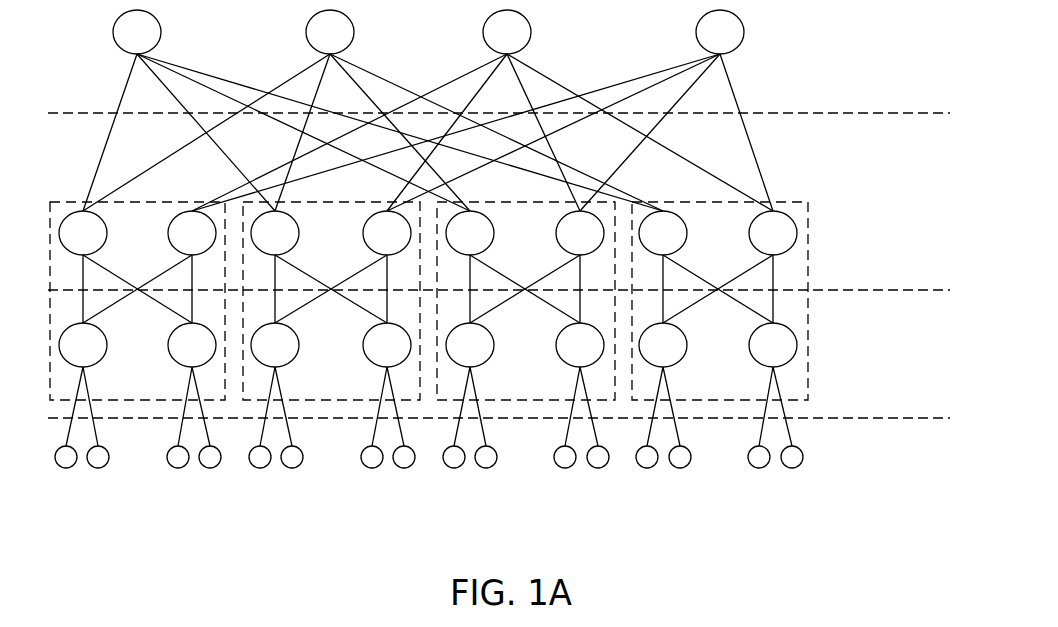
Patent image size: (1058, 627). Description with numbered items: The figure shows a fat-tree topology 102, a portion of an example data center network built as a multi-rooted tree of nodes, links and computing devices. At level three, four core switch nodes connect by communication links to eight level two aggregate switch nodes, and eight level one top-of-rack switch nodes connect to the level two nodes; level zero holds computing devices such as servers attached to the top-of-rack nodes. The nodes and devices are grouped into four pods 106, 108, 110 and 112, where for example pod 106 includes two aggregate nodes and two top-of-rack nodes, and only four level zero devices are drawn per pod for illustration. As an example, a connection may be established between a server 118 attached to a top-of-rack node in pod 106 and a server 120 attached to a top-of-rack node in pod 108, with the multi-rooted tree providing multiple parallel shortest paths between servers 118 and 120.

The fat-tree topology 102 is at (499, 278).
The pod 106 is at (119, 393).
The pod 108 is at (311, 393).
The pod 110 is at (507, 393).
The pod 112 is at (701, 393).
The server 118 is at (108, 472).
The server 120 is at (298, 472).